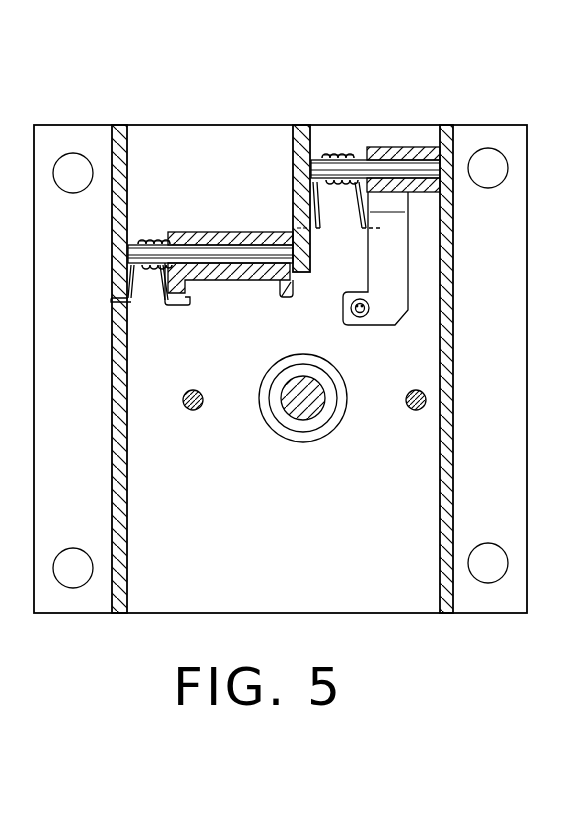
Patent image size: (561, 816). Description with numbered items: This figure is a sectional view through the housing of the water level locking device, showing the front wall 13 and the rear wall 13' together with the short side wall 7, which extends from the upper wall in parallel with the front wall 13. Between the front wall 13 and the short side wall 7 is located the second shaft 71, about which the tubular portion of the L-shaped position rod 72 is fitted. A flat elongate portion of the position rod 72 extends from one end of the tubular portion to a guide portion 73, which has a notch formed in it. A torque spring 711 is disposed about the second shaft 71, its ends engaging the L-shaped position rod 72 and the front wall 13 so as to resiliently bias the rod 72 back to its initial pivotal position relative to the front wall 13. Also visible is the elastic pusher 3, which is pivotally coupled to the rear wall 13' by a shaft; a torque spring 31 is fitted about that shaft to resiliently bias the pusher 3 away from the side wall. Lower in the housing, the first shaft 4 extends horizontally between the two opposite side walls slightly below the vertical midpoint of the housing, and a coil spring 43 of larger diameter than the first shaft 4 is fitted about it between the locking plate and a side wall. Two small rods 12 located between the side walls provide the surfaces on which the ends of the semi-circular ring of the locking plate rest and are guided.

The elastic pusher 3 is at (378, 312).
The first shaft 4 is at (293, 418).
The short side wall 7 is at (294, 125).
The small rods 12 is at (191, 411).
The front wall 13 is at (82, 369).
The rear wall 13' is at (406, 369).
The torque spring 31 is at (340, 150).
The coil spring 43 is at (327, 433).
The second shaft 71 is at (157, 268).
The L-shaped position rod 72 is at (188, 297).
The guide portion 73 is at (288, 299).
The torque spring 711 is at (157, 243).